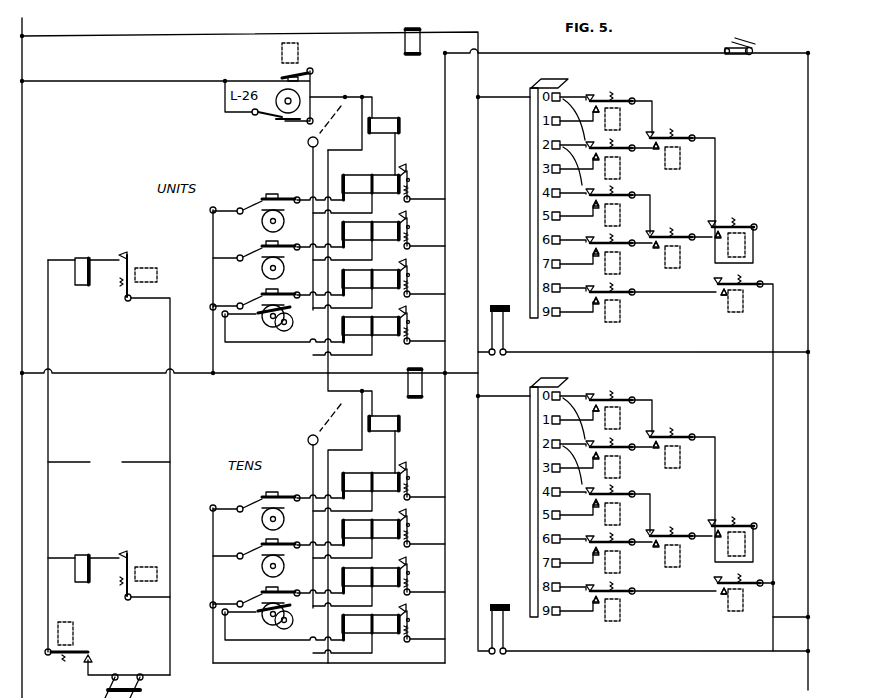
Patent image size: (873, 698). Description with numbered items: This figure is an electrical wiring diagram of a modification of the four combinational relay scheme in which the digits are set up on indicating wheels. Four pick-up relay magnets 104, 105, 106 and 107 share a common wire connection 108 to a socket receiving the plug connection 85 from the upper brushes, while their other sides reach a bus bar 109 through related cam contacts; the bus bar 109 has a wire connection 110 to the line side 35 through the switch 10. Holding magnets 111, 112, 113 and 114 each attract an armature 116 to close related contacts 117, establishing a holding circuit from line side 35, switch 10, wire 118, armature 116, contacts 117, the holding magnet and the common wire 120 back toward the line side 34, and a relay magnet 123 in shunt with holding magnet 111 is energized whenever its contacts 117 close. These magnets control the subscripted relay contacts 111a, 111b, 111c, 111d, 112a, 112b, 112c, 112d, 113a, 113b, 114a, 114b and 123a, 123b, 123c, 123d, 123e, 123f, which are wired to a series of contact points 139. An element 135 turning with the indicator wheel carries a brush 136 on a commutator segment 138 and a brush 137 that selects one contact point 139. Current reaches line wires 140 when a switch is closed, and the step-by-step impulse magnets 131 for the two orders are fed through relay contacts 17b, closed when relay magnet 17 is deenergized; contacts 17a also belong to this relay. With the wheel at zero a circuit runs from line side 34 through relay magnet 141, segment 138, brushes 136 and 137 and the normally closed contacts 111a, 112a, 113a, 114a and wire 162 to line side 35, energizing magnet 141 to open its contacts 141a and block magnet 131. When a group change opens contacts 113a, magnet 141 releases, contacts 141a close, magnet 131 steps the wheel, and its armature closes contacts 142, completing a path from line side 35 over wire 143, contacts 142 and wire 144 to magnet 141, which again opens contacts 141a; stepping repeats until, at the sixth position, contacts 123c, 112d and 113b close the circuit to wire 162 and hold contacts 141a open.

The switch 10 is at (737, 55).
The relay magnet 17 is at (298, 55).
The relay contacts 17a is at (282, 78).
The relay contacts 17b is at (92, 660).
The line side 34 is at (22, 190).
The line side 35 is at (808, 184).
The plug connection 85 is at (335, 121).
The pick-up relay magnet 104 is at (340, 187).
The pick-up relay magnet 105 is at (340, 234).
The pick-up relay magnet 106 is at (340, 282).
The pick-up relay magnet 107 is at (340, 331).
The common wire connection 108 is at (312, 156).
The bus bar 109 is at (213, 222).
The wire connection 110 is at (312, 529).
The holding magnet 111 is at (620, 123).
The relay contacts 111a is at (606, 96).
The relay contacts 111b is at (620, 101).
The relay contacts 111c is at (602, 146).
The relay contacts 111d is at (594, 158).
The holding magnet 112 is at (681, 158).
The relay contacts 112a is at (660, 137).
The relay contacts 112b is at (657, 152).
The relay contacts 112c is at (660, 235).
The relay contacts 112d is at (656, 252).
The holding magnet 113 is at (745, 245).
The relay contacts 113a is at (725, 225).
The relay contacts 113b is at (716, 238).
The holding magnet 114 is at (745, 305).
The relay contacts 114a is at (716, 281).
The relay contacts 114b is at (722, 295).
The armature 116 is at (411, 196).
The contacts 117 is at (402, 162).
The wire 118 is at (512, 53).
The wire 120 is at (348, 90).
The relay magnet 123 is at (620, 215).
The relay contacts 123a is at (598, 196).
The relay contacts 123b is at (596, 208).
The relay contacts 123c is at (598, 244).
The relay contacts 123d is at (596, 256).
The relay contacts 123e is at (590, 295).
The relay contacts 123f is at (597, 305).
The step-by-step impulse magnet 131 is at (82, 272).
The element 135 is at (552, 80).
The brush 136 is at (530, 90).
The brush 137 is at (562, 92).
The commutator segment 138 is at (530, 215).
The contact points 139 is at (568, 300).
The line wires 140 is at (109, 462).
The relay magnet 141 is at (405, 44).
The relay contacts 141a is at (148, 567).
The contacts 142 is at (490, 340).
The wire 143 is at (705, 352).
The wire 144 is at (459, 358).
The wire 162 is at (773, 433).